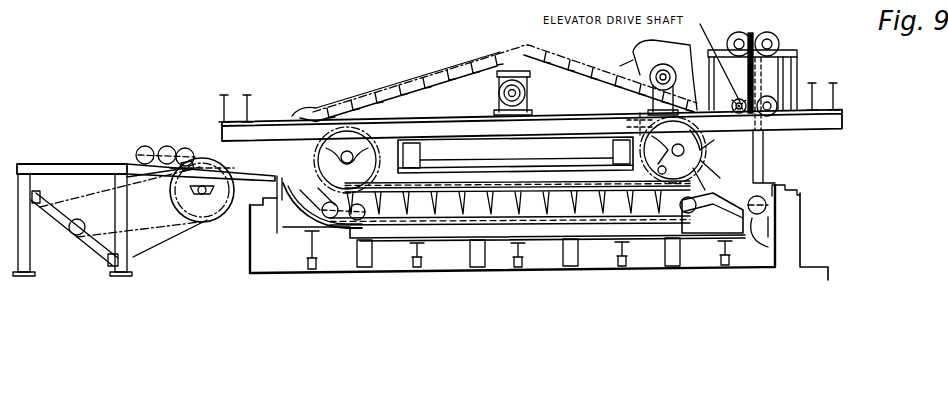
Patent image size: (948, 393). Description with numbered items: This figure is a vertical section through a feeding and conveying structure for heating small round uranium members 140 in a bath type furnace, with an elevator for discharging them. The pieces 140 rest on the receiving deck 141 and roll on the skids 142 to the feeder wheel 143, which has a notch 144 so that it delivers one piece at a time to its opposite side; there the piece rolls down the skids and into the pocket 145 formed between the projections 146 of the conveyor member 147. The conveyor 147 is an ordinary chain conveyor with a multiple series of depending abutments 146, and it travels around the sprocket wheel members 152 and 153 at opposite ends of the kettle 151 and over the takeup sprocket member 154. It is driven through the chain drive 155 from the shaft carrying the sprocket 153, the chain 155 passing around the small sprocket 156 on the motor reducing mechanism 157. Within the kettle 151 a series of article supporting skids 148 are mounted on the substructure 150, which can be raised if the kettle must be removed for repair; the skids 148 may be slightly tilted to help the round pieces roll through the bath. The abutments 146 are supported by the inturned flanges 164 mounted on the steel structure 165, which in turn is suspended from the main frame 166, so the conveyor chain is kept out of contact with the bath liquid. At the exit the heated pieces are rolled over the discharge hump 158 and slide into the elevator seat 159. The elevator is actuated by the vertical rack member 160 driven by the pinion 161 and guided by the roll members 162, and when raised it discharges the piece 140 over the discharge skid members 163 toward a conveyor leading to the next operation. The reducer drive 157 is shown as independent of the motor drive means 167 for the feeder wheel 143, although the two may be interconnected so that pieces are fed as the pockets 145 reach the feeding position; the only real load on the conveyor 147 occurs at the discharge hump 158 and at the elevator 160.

The uranium members 140 is at (147, 146).
The receiving deck 141 is at (58, 165).
The skids 142 is at (123, 162).
The feeder wheel 143 is at (222, 216).
The notch 144 is at (190, 160).
The pocket 145 is at (308, 162).
The projections 146 is at (462, 200).
The conveyor member 147 is at (561, 104).
The article supporting skids 148 is at (502, 228).
The substructure 150 is at (372, 263).
The kettle 151 is at (278, 258).
The sprocket wheel member 152 is at (488, 86).
The sprocket wheel member 153 is at (654, 152).
The takeup sprocket member 154 is at (499, 53).
The chain drive 155 is at (642, 126).
The small sprocket 156 is at (632, 63).
The motor reducing mechanism 157 is at (653, 49).
The discharge hump 158 is at (713, 212).
The elevator seat 159 is at (772, 246).
The vertical rack member 160 is at (765, 151).
The pinion 161 is at (739, 96).
The roll members 162 is at (745, 35).
The discharge skid members 163 is at (790, 189).
The inturned flanges 164 is at (418, 186).
The steel structure 165 is at (546, 178).
The main frame 166 is at (250, 118).
The motor drive means 167 is at (78, 238).